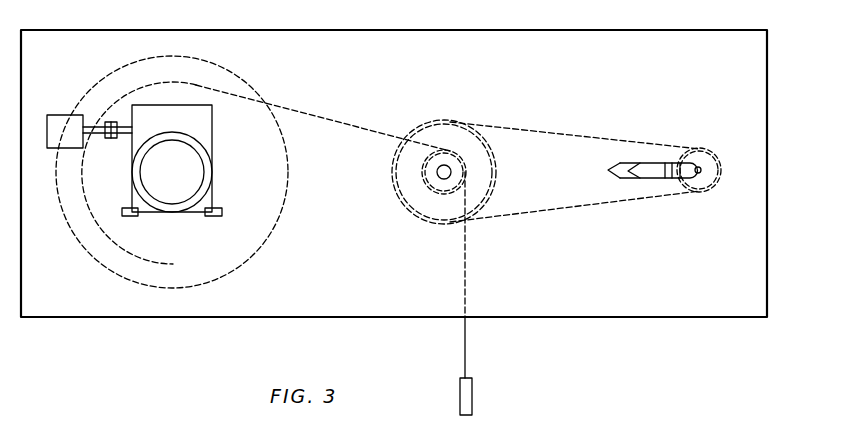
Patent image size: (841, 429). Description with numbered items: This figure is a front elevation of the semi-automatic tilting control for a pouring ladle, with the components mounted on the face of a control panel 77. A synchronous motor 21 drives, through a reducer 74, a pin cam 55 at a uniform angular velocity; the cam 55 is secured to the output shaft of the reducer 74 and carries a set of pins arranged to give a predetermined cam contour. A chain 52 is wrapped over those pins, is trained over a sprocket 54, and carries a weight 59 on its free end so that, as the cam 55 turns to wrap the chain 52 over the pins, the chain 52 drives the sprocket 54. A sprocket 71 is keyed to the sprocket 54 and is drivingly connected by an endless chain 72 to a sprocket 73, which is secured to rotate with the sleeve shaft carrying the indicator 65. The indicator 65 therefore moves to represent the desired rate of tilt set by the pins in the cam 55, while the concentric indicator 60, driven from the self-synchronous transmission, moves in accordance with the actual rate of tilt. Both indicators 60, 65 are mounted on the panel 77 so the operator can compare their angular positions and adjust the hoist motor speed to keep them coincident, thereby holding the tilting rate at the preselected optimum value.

The synchronous motor 21 is at (57, 122).
The chain 52 is at (343, 118).
The sprocket 54 is at (432, 188).
The pin cam 55 is at (289, 185).
The weight 59 is at (472, 398).
The indicator 60 is at (653, 173).
The indicator 65 is at (625, 176).
The sprocket 71 is at (397, 192).
The endless chain 72 is at (615, 138).
The sprocket 73 is at (709, 143).
The reducer 74 is at (207, 129).
The control panel 77 is at (580, 307).